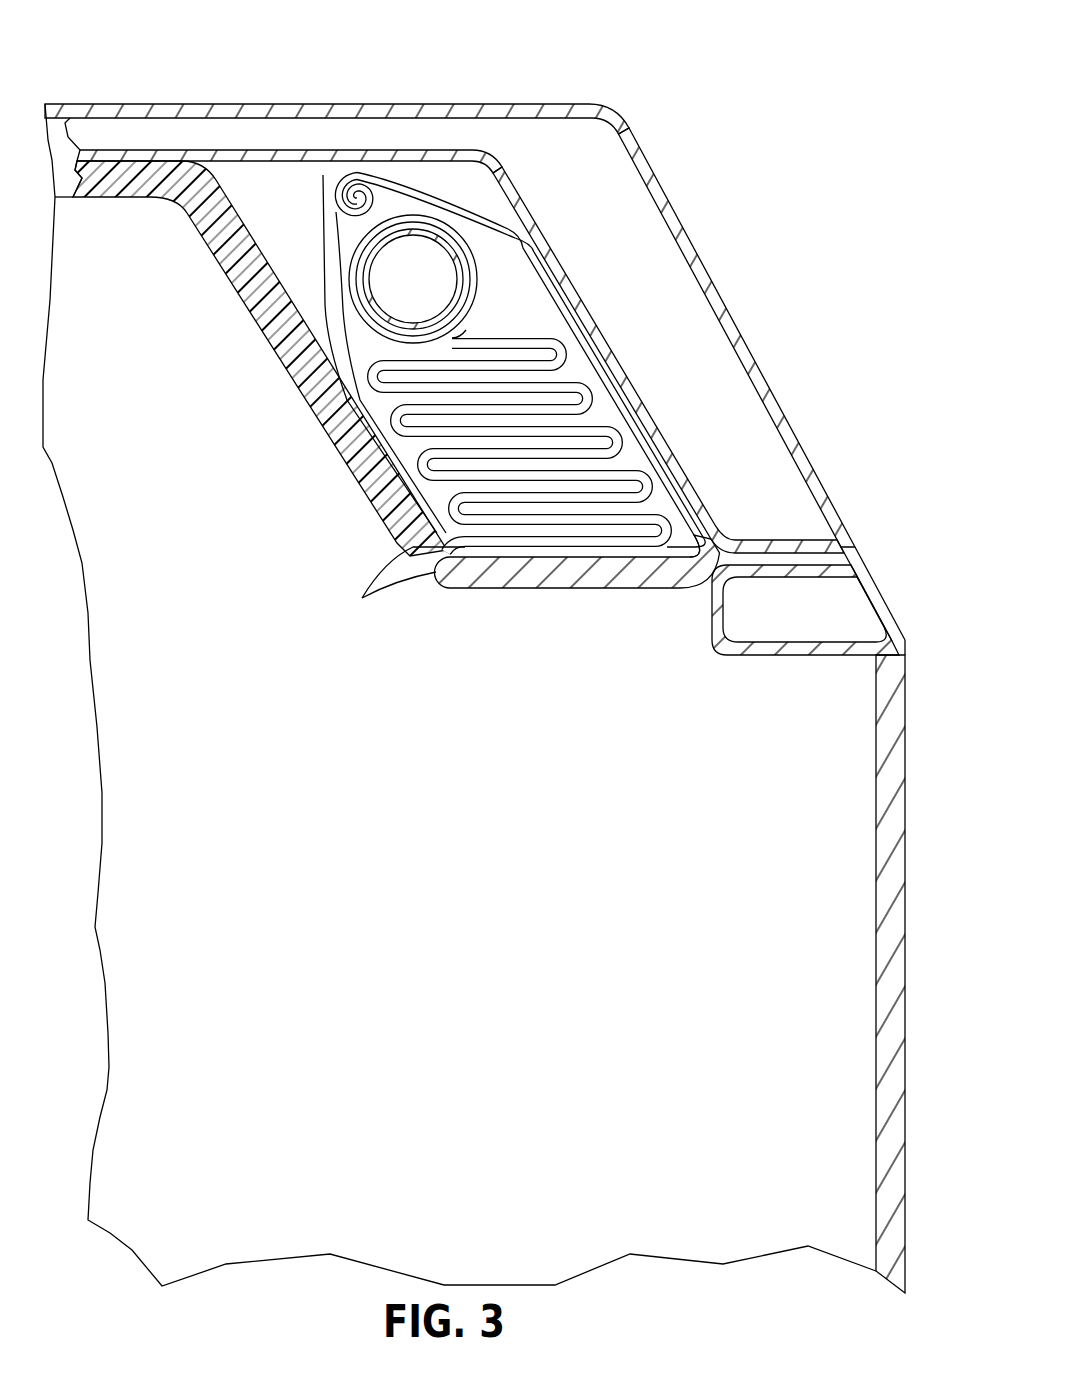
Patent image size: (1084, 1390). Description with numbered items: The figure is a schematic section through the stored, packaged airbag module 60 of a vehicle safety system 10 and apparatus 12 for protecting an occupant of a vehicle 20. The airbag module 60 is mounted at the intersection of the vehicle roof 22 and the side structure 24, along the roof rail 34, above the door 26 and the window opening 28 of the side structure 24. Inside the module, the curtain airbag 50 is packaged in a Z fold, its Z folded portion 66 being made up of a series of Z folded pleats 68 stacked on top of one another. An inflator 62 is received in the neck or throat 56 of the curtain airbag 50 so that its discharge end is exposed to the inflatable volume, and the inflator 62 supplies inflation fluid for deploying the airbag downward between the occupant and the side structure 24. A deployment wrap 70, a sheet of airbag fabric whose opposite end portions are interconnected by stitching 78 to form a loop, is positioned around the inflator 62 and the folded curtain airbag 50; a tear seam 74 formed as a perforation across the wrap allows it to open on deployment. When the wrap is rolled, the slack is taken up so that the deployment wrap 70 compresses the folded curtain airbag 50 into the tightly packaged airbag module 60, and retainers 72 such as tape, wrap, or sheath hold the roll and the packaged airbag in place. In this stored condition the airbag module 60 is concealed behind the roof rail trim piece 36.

The vehicle safety system 10 is at (675, 125).
The apparatus 12 is at (683, 158).
The vehicle 20 is at (585, 75).
The vehicle roof 22 is at (245, 105).
The side structure 24 is at (830, 512).
The door 26 is at (882, 598).
The window/window opening 28 is at (890, 748).
The roof rail 34 is at (616, 368).
The trim piece 36 is at (333, 408).
The curtain airbag 50 is at (570, 314).
The throat 56 is at (264, 335).
The airbag module 60 is at (530, 178).
The inflator 62 is at (456, 259).
The Z folded portion 66 is at (400, 492).
The Z folded pleats 68 is at (378, 588).
The deployment wrap 70 is at (340, 209).
The retainers 72 is at (325, 260).
The tear seam 74 is at (323, 175).
The stitching 78 is at (550, 532).